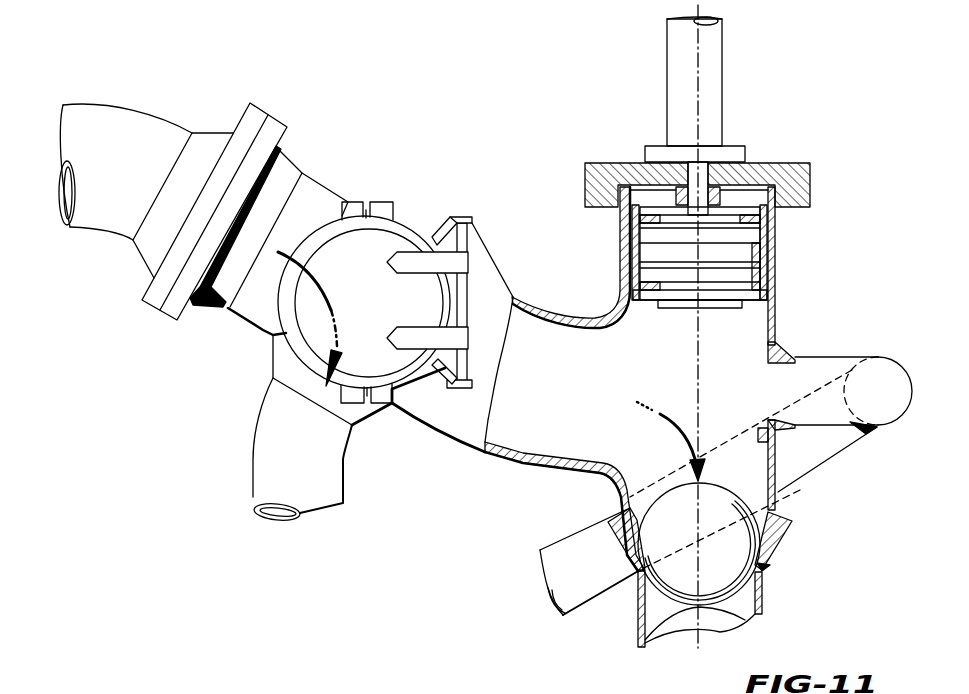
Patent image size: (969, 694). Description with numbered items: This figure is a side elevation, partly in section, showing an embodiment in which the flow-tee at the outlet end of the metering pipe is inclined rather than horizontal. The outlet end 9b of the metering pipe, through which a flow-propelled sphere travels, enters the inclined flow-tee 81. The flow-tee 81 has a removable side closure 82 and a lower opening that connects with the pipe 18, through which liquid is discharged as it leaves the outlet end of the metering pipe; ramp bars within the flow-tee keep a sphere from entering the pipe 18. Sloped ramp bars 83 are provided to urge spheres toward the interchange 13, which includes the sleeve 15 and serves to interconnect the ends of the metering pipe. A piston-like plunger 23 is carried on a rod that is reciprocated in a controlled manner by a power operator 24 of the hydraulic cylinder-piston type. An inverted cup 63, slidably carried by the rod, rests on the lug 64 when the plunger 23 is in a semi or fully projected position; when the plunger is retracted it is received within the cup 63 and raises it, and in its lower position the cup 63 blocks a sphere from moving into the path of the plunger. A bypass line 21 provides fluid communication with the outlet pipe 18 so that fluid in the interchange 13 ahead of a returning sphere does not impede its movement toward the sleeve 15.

The outlet end of metering pipe 9b is at (168, 125).
The flow-tee 81 is at (236, 342).
The removable side closure 82 is at (390, 240).
The pipe 18 is at (255, 493).
The sloped ramp bars 83 is at (520, 447).
The cup 63 is at (627, 258).
The plunger 23 is at (745, 255).
The power operator 24 is at (730, 95).
The bypass line 21 is at (823, 458).
The lug 64 is at (765, 443).
The interchange 13 is at (782, 582).
The sleeve 15 is at (638, 630).